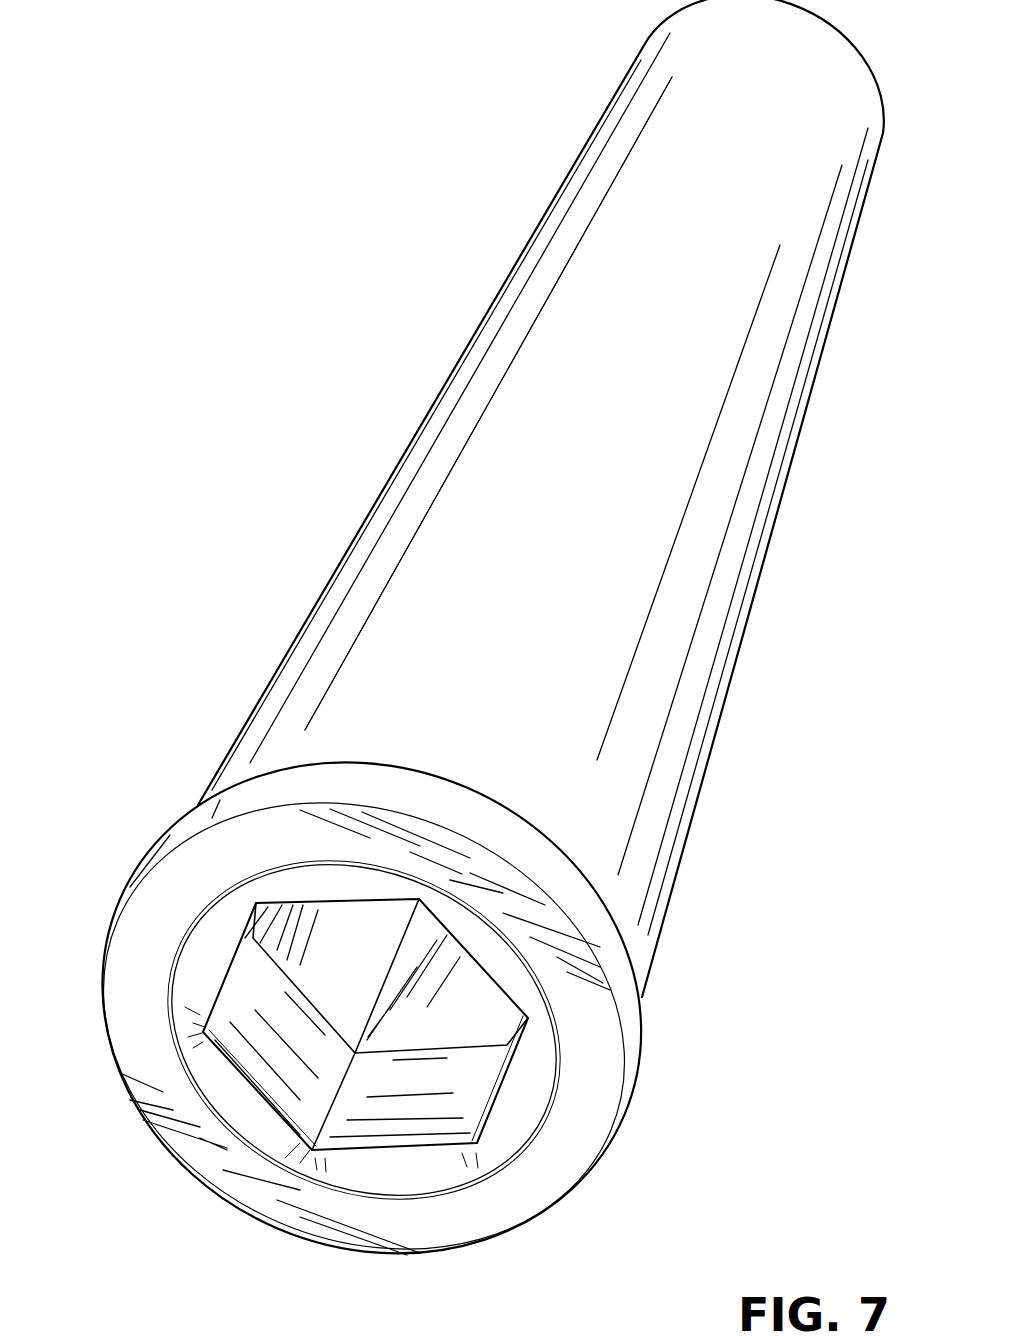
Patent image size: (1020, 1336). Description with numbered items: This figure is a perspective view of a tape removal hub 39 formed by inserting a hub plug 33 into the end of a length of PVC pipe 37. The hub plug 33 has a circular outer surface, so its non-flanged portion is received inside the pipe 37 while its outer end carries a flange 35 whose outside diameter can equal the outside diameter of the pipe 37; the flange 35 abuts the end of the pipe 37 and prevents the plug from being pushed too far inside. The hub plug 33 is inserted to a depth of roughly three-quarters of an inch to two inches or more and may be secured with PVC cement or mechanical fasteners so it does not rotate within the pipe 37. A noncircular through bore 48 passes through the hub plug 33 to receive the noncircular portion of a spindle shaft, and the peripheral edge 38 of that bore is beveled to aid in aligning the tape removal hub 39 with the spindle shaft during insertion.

The hub plug 33 is at (455, 668).
The flange 35 is at (107, 1040).
The pipe 37 is at (525, 250).
The peripheral edge 38 is at (364, 1029).
The tape removal hub 39 is at (318, 408).
The square socket 48 is at (356, 1035).